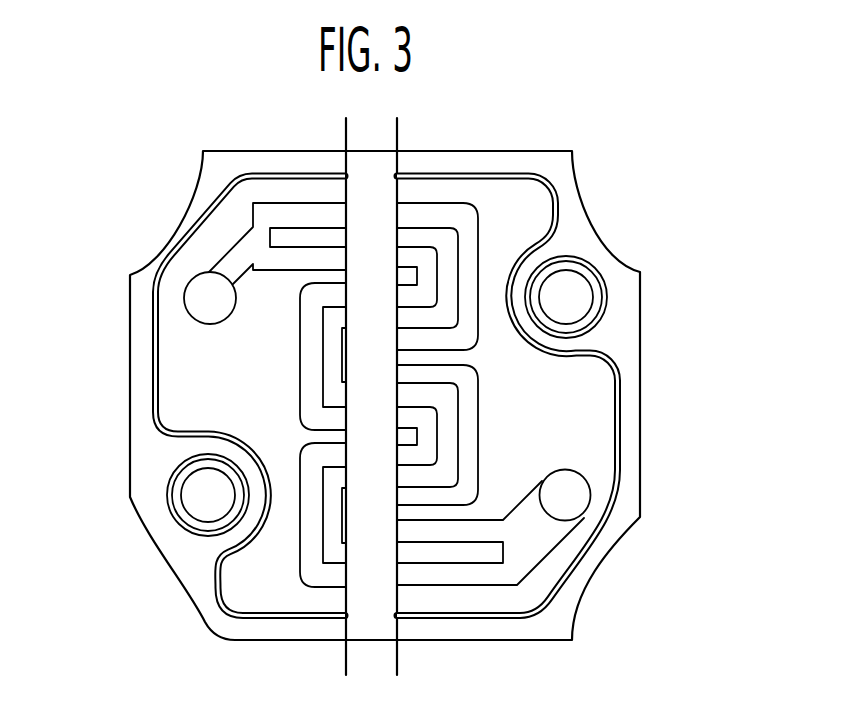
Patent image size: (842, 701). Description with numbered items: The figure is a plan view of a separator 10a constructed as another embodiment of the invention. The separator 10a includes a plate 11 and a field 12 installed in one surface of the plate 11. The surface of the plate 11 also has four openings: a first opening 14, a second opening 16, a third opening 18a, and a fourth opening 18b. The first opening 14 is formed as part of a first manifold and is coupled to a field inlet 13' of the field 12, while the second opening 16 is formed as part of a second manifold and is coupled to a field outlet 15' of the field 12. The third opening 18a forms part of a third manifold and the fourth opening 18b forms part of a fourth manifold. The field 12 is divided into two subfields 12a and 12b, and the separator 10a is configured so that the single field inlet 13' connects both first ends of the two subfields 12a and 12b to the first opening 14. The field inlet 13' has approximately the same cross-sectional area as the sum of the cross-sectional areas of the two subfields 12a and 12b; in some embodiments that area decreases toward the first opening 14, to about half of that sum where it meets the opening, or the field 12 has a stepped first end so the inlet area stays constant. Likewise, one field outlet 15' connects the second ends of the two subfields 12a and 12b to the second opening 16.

The separator 10a is at (557, 138).
The plate 11 is at (641, 388).
The field 12 is at (317, 186).
The subfield 12a is at (415, 255).
The subfield 12b is at (440, 215).
The field inlet 13' is at (244, 226).
The first opening 14 is at (203, 302).
The field outlet 15' is at (490, 591).
The second opening 16 is at (572, 500).
The third opening 18a is at (570, 298).
The fourth opening 18b is at (205, 506).